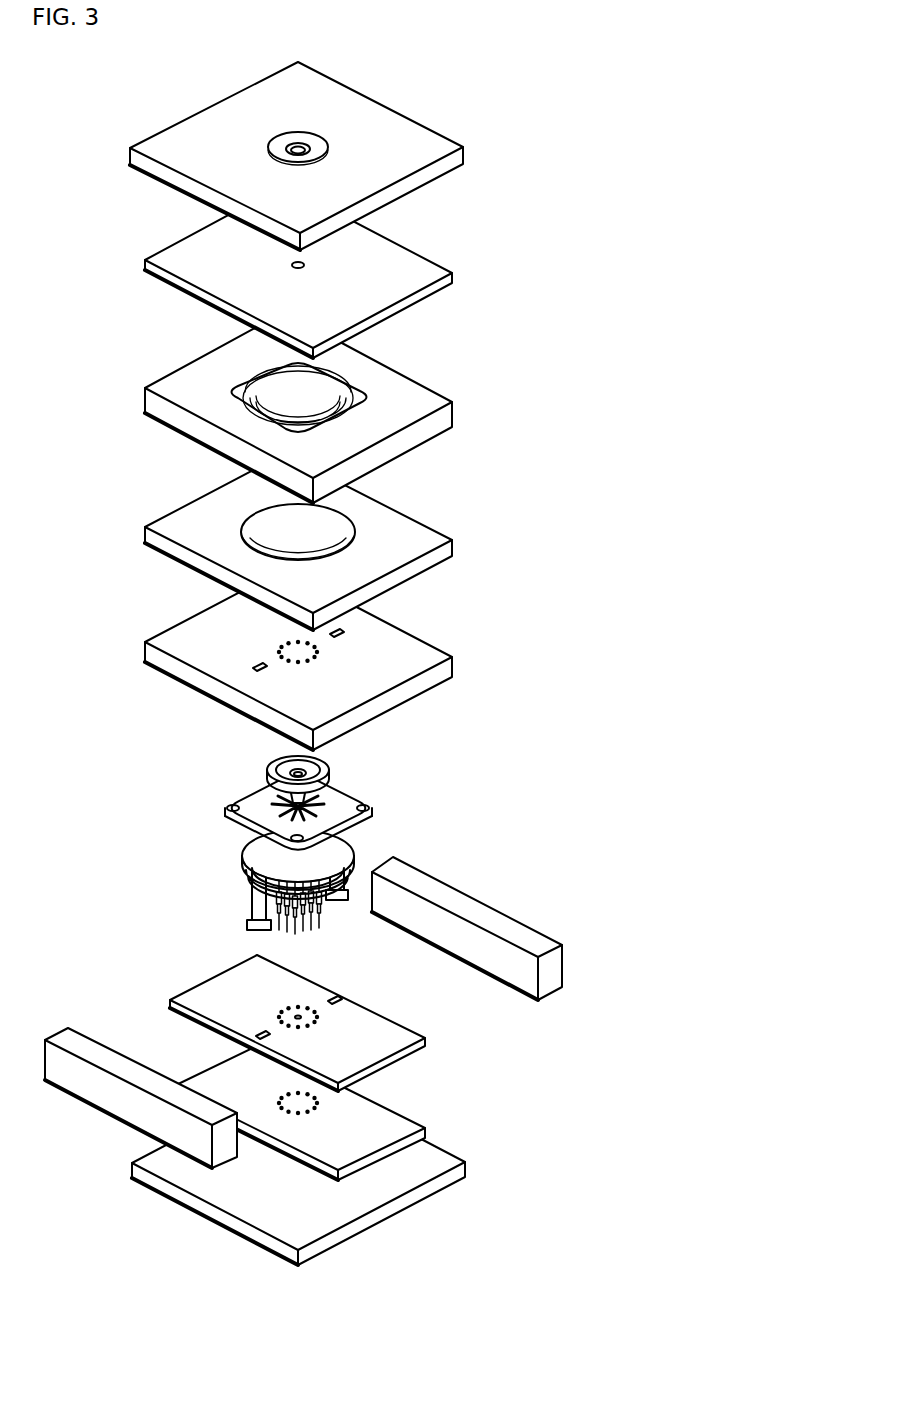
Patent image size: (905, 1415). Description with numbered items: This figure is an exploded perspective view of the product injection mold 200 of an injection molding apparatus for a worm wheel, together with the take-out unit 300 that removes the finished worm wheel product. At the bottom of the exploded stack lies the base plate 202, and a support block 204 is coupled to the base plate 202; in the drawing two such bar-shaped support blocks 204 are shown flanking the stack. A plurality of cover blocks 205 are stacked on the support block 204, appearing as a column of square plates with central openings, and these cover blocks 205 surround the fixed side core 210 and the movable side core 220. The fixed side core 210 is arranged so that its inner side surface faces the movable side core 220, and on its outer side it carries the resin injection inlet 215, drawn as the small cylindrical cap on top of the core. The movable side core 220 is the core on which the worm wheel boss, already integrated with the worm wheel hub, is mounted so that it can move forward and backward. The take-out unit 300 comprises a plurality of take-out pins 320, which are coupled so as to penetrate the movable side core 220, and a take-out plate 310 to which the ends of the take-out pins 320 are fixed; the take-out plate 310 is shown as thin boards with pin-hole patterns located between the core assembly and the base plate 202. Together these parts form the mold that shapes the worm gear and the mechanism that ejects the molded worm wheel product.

The product injection mold 200 is at (318, 664).
The base plate 202 is at (260, 1215).
The support block 204 is at (90, 1050).
The cover blocks 205 is at (486, 88).
The fixed side core 210 is at (299, 832).
The resin injection inlet 215 is at (273, 764).
The movable side core 220 is at (258, 875).
The take-out unit 300 is at (381, 1028).
The take-out plate 310 is at (403, 1122).
The take-out pins 320 is at (313, 895).